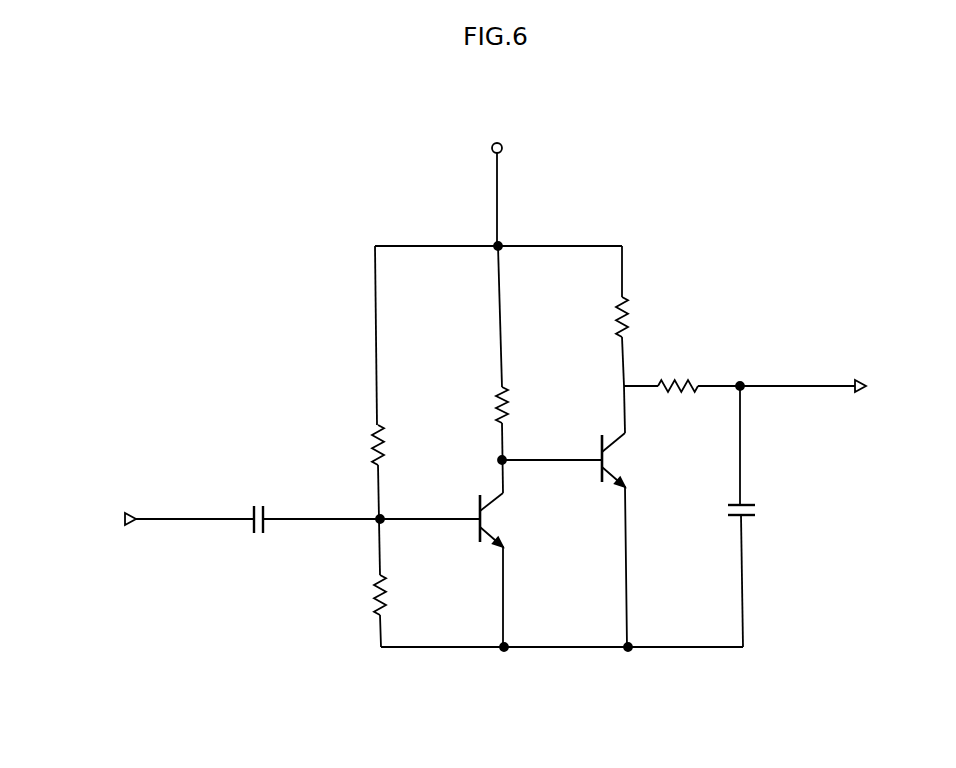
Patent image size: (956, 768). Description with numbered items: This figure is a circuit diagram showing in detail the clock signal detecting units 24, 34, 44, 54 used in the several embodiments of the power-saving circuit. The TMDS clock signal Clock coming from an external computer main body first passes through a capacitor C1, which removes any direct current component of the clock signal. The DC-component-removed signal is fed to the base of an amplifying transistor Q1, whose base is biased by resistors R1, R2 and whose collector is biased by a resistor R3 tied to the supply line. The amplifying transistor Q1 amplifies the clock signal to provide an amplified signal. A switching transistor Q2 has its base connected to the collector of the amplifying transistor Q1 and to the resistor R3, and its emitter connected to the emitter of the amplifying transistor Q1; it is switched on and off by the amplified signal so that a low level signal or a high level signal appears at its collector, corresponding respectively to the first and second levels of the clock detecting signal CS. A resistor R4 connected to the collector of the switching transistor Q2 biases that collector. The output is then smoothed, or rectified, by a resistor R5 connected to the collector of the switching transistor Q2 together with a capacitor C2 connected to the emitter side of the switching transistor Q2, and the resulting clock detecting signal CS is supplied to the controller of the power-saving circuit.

The clock signal detecting unit 24 is at (476, 382).
The clock signal detecting unit 34 is at (476, 382).
The clock signal detecting unit 44 is at (476, 382).
The clock signal detecting unit 54 is at (683, 218).
The resistor R1 is at (391, 445).
The resistor R2 is at (392, 595).
The resistor R3 is at (514, 405).
The resistor R4 is at (634, 317).
The resistor R5 is at (678, 396).
The capacitor C1 is at (259, 533).
The capacitor C2 is at (756, 512).
The amplifying transistor Q1 is at (503, 570).
The switching transistor Q2 is at (625, 540).